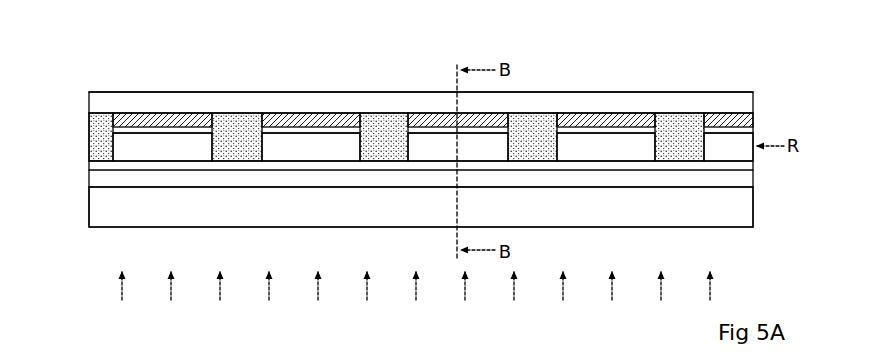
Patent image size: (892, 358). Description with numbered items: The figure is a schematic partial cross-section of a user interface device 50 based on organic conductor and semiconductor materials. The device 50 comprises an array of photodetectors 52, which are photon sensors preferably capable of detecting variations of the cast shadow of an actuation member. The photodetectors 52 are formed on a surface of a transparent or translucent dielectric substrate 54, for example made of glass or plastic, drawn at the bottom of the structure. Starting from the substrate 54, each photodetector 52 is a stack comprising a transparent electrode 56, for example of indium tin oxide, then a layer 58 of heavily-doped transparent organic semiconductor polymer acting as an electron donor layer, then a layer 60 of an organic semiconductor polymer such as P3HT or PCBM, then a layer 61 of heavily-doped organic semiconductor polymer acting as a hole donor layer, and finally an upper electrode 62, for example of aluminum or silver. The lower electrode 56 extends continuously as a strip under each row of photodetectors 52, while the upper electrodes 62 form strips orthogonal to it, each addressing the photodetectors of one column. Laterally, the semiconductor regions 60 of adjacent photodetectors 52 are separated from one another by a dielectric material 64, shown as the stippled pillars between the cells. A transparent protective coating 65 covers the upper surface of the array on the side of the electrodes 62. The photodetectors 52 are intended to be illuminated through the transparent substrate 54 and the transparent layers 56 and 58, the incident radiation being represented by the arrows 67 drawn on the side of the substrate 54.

The user interface device 50 is at (90, 62).
The photodetector 52 is at (160, 85).
The substrate 54 is at (110, 207).
The transparent electrode 56 is at (238, 180).
The electron donor layer 58 is at (302, 165).
The organic semiconductor polymer layer 60 is at (275, 143).
The hole donor layer 61 is at (298, 128).
The upper electrode 62 is at (342, 118).
The dielectric material 64 is at (383, 147).
The transparent protective coating 65 is at (735, 102).
The incident radiation 67 is at (318, 292).